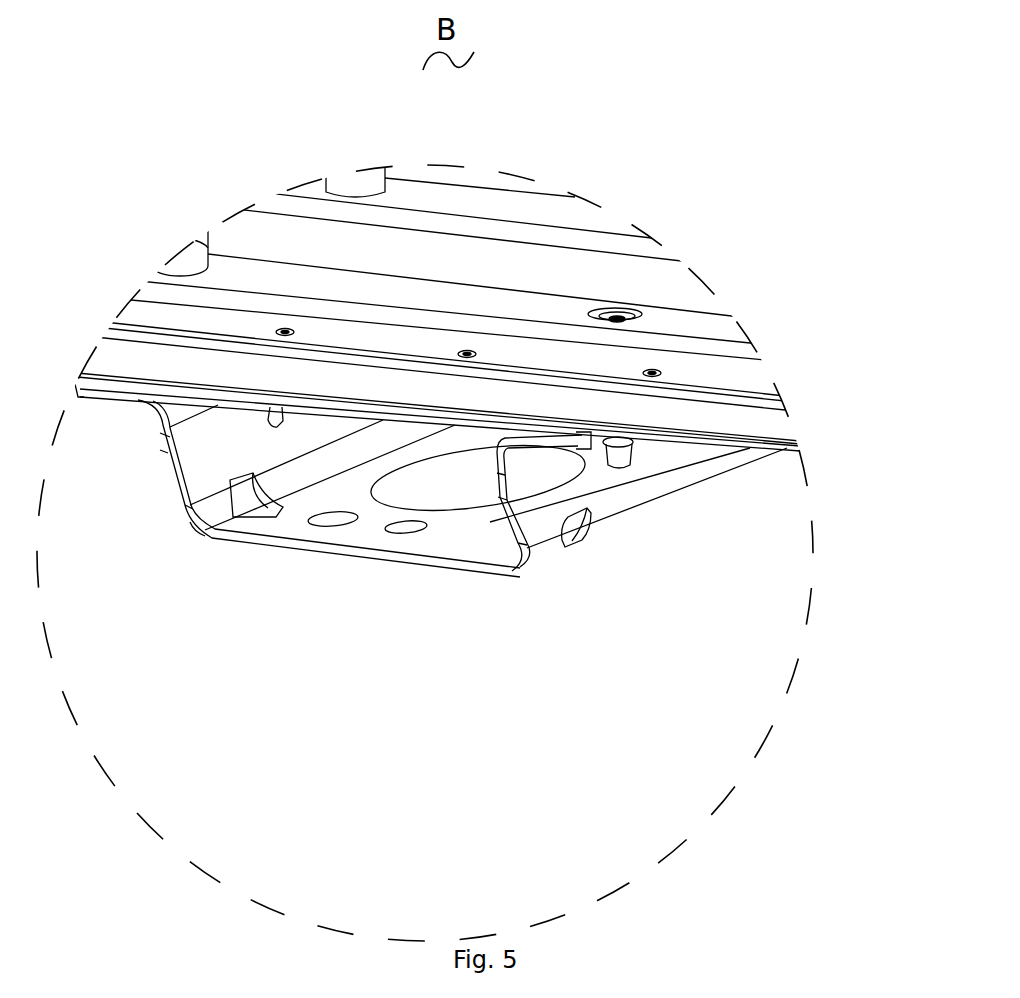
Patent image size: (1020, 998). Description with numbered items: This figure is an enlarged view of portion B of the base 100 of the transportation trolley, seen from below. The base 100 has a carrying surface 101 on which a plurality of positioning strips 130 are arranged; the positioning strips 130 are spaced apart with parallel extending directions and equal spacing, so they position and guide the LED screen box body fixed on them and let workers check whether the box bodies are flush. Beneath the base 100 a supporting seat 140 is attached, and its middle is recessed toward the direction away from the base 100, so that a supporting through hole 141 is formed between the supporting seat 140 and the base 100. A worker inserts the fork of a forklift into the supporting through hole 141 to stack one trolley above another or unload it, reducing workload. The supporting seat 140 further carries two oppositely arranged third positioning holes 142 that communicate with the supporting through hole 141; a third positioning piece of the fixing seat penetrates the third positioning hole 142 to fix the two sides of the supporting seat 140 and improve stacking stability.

The base 100 is at (643, 410).
The carrying surface 101 is at (740, 382).
The positioning strip 130 is at (690, 327).
The supporting seat 140 is at (473, 547).
The supporting through hole 141 is at (338, 492).
The third positioning hole 142 is at (197, 527).